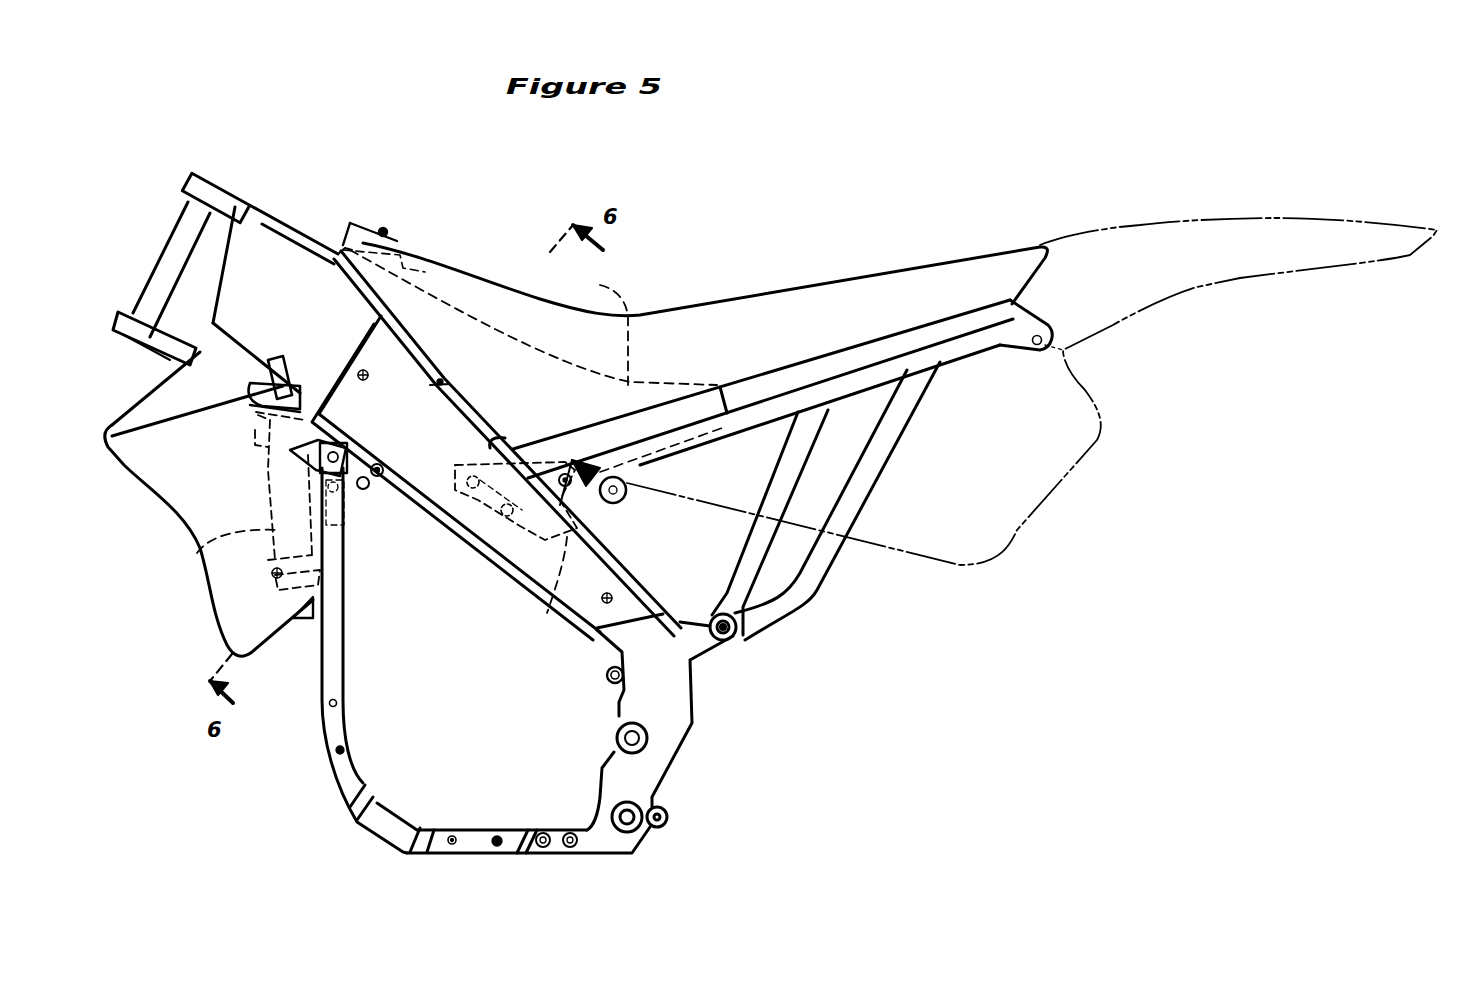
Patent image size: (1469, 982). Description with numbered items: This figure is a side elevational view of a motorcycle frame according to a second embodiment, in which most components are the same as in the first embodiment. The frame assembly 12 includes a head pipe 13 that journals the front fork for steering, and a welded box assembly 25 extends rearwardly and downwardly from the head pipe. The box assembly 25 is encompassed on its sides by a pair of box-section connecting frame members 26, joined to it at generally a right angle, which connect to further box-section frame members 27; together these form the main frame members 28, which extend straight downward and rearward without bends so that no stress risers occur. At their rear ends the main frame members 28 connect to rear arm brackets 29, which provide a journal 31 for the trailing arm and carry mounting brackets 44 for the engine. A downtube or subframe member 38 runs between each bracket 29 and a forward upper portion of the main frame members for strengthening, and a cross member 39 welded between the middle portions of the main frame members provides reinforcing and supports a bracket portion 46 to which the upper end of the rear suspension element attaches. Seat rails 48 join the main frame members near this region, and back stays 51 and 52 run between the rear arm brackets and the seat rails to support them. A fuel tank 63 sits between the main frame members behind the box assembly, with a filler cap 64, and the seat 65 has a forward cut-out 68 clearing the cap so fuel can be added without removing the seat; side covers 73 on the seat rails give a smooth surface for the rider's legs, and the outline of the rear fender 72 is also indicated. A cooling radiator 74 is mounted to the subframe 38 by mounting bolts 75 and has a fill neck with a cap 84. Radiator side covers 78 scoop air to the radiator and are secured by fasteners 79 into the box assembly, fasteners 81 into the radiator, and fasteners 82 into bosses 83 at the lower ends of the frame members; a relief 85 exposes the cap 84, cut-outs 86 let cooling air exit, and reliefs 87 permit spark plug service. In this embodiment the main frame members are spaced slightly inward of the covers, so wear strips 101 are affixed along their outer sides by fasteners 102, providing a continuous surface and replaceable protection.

The frame assembly 12 is at (130, 345).
The head pipe 13 is at (168, 247).
The box assembly 25 is at (258, 216).
The connecting frame members 26 is at (386, 326).
The frame members 27 is at (489, 430).
The main frame members 28 is at (532, 391).
The brackets 29 is at (677, 733).
The journal 31 is at (617, 743).
The downtube or subframe member 38 is at (345, 775).
The cross member 39 is at (533, 581).
The mounting brackets 44 is at (607, 675).
The bracket portion 46 is at (612, 504).
The seat rails 48 is at (778, 398).
The back stay 51 is at (735, 575).
The back stay 52 is at (807, 583).
The fuel tank 63 is at (595, 328).
The cap 64 is at (395, 245).
The seat 65 is at (750, 313).
The cut-out 68 is at (340, 243).
The rear fender 72 is at (1233, 226).
The side covers 73 is at (1072, 455).
The cooling radiator 74 is at (230, 560).
The mounting bolts 75 is at (435, 383).
The side covers 78 is at (145, 470).
The fasteners 79 is at (247, 387).
The fasteners 81 is at (268, 600).
The fasteners 82 is at (410, 470).
The bosses 83 is at (410, 467).
The cap 84 is at (282, 360).
The relief 85 is at (248, 403).
The cut-outs 86 is at (282, 518).
The reliefs 87 is at (352, 515).
The wear strips 101 is at (445, 385).
The fasteners 102 is at (440, 378).